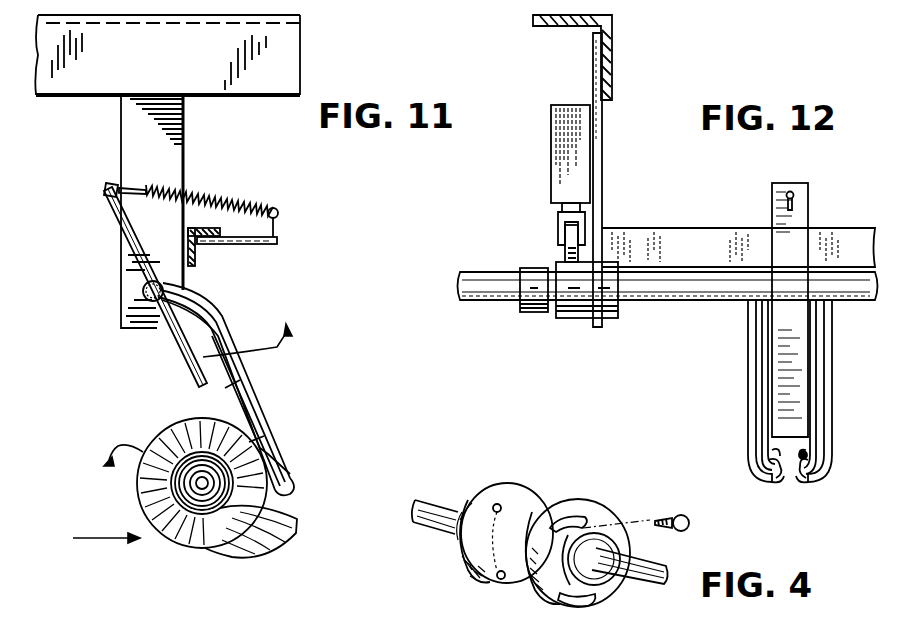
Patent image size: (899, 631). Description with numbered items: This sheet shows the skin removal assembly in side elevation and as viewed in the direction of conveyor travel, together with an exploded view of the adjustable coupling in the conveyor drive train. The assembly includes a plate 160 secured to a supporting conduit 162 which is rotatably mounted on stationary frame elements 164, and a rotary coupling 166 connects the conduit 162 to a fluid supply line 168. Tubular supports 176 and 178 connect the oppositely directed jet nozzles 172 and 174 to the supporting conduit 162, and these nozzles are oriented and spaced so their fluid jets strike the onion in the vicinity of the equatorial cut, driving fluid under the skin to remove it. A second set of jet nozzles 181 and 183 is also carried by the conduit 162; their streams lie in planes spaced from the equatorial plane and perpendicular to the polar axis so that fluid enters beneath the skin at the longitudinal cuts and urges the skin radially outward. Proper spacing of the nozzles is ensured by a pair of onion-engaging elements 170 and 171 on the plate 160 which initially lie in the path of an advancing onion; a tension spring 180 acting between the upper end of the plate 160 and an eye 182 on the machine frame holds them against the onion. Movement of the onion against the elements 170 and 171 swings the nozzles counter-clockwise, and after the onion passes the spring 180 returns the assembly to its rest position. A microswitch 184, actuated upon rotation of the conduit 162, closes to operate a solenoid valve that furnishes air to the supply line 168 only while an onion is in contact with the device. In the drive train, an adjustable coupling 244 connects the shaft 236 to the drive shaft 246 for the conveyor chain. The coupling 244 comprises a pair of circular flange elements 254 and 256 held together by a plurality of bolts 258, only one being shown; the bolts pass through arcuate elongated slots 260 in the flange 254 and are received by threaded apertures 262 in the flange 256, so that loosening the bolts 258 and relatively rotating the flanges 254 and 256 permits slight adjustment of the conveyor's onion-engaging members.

In FIG. 11, the plate 160 is at (222, 376).
In FIG. 12, the plate 160 is at (778, 334).
In FIG. 11, the supporting conduit 162 is at (143, 291).
In FIG. 12, the supporting conduit 162 is at (690, 296).
In FIG. 11, the stationary frame elements 164 is at (127, 150).
In FIG. 12, the stationary frame elements 164 is at (603, 167).
In FIG. 12, the rotary coupling 166 is at (535, 308).
In FIG. 12, the fluid supply line 168 is at (500, 278).
In FIG. 12, the onion-engaging element 170 is at (776, 488).
In FIG. 11, the onion-engaging element 171 is at (292, 486).
In FIG. 12, the onion-engaging element 171 is at (806, 490).
In FIG. 12, the jet nozzle 172 is at (770, 474).
In FIG. 12, the jet nozzle 174 is at (818, 468).
In FIG. 12, the tubular support 176 is at (750, 410).
In FIG. 11, the tubular support 178 is at (266, 426).
In FIG. 12, the tubular support 178 is at (832, 408).
In FIG. 11, the tension spring 180 is at (214, 206).
In FIG. 12, the jet nozzle 181 is at (763, 373).
In FIG. 11, the eye 182 is at (277, 219).
In FIG. 11, the jet nozzle 183 is at (186, 353).
In FIG. 12, the jet nozzle 183 is at (814, 386).
In FIG. 12, the microswitch 184 is at (555, 153).
In FIG. 14, the shaft 236 is at (650, 580).
In FIG. 14, the adjustable coupling 244 is at (598, 504).
In FIG. 14, the drive shaft 246 is at (428, 522).
In FIG. 14, the circular flange element 254 is at (537, 592).
In FIG. 14, the circular flange element 256 is at (496, 491).
In FIG. 14, the bolt 258 is at (689, 526).
In FIG. 14, the arcuate elongated slot 260 is at (572, 519).
In FIG. 14, the threaded aperture 262 is at (488, 570).